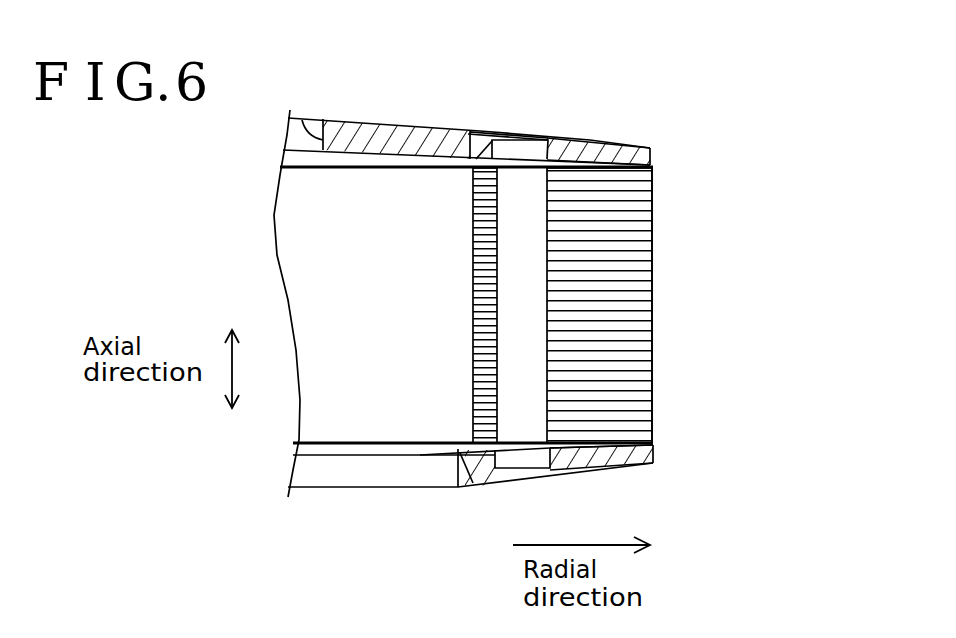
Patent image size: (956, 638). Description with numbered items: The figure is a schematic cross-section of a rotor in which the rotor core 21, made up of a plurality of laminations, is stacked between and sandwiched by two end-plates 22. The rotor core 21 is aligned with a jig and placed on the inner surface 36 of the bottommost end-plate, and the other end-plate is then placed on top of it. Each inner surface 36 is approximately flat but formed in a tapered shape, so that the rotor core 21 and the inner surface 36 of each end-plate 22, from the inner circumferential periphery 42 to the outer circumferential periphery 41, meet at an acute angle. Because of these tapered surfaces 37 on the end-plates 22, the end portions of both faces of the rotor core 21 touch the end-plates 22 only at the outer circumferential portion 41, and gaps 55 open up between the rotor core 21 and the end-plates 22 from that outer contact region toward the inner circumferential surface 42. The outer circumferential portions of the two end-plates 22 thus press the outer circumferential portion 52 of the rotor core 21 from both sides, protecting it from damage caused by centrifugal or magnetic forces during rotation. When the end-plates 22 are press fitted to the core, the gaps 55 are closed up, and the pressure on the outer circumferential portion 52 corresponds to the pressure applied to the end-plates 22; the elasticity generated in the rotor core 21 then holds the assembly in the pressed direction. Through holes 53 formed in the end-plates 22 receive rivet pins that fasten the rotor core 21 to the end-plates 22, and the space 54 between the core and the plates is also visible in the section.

The rotor core 21 is at (640, 300).
The end-plates 22 is at (400, 130).
The inner surface 36 is at (578, 166).
The tapered surfaces 37 is at (615, 143).
The outer circumferential periphery 41 is at (650, 152).
The inner circumferential periphery 42 is at (302, 120).
The outer circumferential portion 52 is at (653, 238).
The through holes 53 is at (497, 145).
The gap 54 is at (527, 385).
The gaps 55 is at (472, 178).